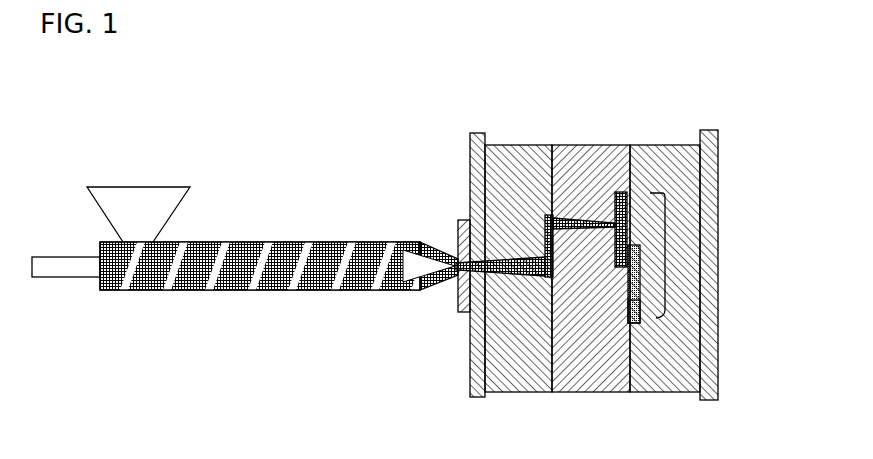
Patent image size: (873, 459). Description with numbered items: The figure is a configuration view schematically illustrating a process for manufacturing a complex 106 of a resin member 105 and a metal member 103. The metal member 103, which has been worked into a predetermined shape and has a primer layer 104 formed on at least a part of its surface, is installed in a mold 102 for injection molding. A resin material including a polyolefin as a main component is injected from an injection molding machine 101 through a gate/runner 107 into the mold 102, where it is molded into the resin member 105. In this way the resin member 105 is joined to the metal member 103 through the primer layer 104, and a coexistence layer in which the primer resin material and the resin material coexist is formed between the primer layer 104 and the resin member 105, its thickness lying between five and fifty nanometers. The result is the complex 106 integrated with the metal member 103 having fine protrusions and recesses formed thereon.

The injection molding machine 101 is at (215, 243).
The mold 102 is at (723, 123).
The metal member 103 is at (640, 305).
The primer layer 104 is at (640, 250).
The resin member 105 is at (628, 247).
The complex 106 is at (668, 263).
The gate/runner 107 is at (457, 296).